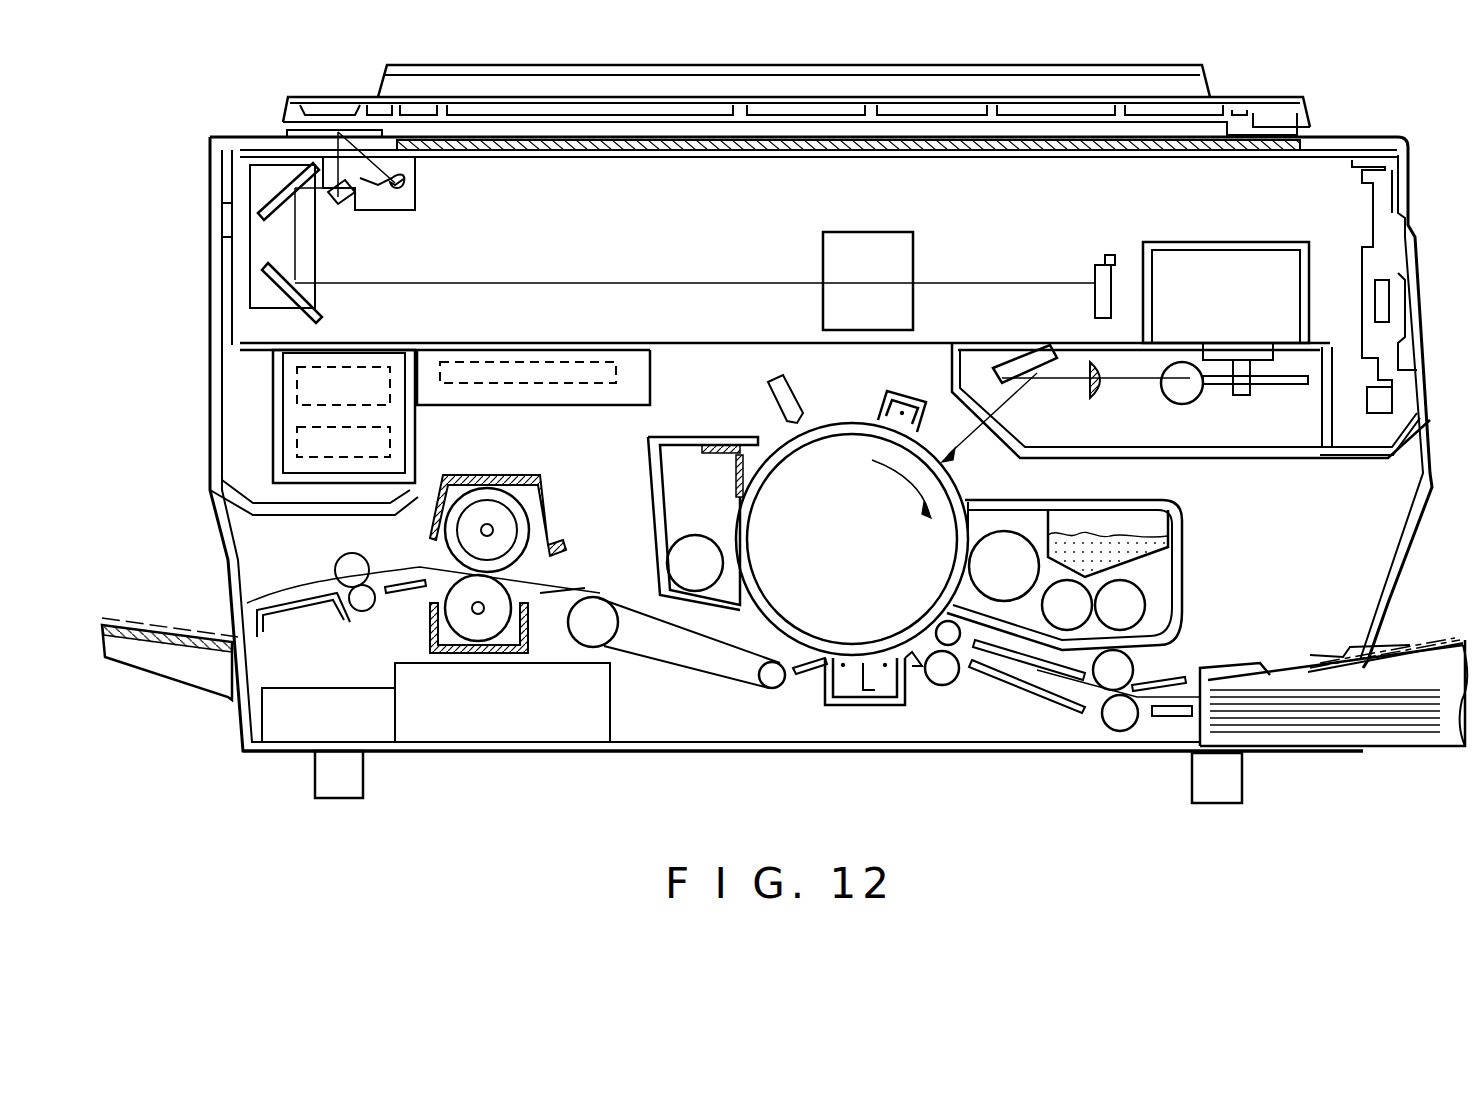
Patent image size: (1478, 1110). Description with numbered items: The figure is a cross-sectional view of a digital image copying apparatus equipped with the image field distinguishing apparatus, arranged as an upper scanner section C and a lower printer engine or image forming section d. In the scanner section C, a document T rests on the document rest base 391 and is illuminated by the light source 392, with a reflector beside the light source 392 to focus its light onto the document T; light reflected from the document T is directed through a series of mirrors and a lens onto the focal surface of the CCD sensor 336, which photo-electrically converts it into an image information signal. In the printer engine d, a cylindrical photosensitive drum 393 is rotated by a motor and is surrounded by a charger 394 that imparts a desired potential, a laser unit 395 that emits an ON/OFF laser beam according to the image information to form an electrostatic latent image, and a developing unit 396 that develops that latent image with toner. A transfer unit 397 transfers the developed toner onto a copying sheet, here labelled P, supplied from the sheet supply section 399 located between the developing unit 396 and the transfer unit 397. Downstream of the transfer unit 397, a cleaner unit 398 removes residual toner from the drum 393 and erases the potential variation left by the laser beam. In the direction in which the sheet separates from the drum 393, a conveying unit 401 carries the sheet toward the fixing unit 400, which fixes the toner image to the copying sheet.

The scanner section C is at (241, 135).
The document T is at (633, 140).
The document rest base 391 is at (753, 158).
The light source 392 is at (412, 177).
The CCD sensor 336 is at (1096, 265).
The photosensitive drum 393 is at (832, 422).
The charger 394 is at (917, 402).
The laser unit 395 is at (1210, 460).
The developing unit 396 is at (1180, 583).
The transfer unit 397 is at (905, 695).
The cleaner unit 398 is at (648, 447).
The sheet supply section 399 is at (1450, 643).
The fixing unit 400 is at (550, 512).
The conveying unit 401 is at (678, 660).
The paper P is at (1398, 665).
The printer engine d is at (892, 752).